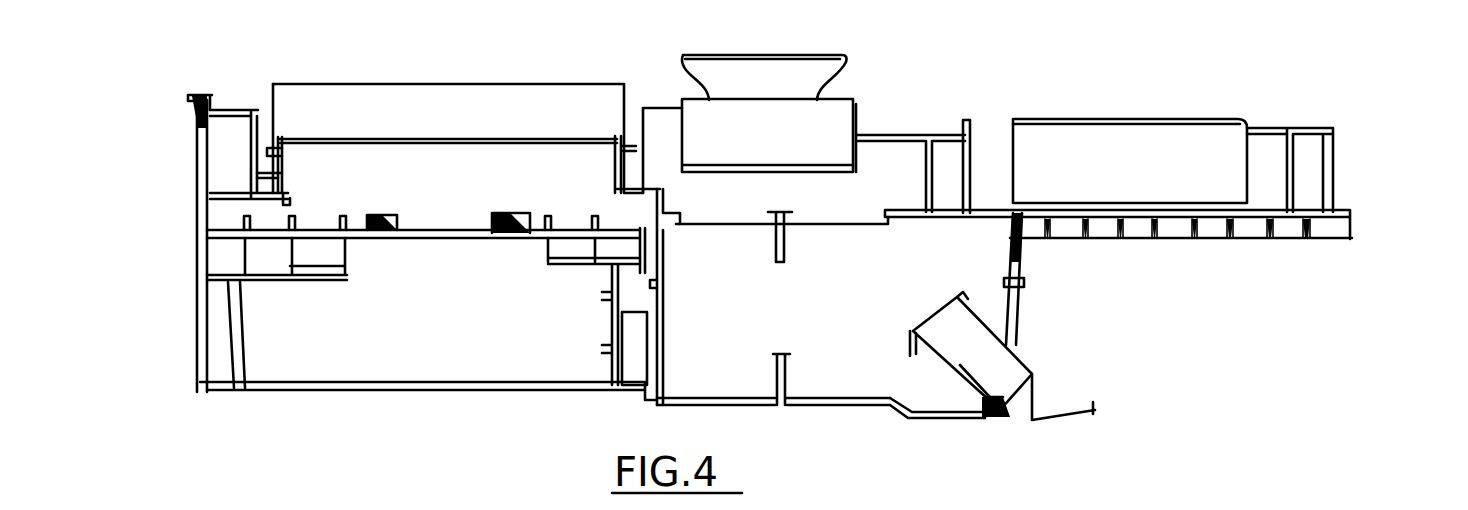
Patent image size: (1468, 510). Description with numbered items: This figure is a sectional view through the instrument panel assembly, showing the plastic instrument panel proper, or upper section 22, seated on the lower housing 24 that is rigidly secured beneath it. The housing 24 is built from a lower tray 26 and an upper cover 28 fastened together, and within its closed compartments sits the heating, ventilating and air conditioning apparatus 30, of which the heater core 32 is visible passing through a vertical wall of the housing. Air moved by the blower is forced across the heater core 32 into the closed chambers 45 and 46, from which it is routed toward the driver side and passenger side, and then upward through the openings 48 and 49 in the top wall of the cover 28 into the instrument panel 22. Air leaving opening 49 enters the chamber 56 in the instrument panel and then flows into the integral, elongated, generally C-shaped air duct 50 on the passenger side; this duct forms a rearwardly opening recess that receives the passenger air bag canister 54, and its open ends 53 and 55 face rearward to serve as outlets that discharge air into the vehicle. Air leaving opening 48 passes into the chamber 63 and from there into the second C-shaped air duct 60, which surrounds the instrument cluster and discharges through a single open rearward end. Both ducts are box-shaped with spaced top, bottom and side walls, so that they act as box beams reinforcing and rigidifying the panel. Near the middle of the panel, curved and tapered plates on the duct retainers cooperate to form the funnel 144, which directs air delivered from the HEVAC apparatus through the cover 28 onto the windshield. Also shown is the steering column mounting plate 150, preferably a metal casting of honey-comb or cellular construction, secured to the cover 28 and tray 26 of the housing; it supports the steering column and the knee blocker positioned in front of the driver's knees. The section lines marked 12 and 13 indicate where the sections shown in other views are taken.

The section line 12- 12 is at (893, 155).
The section line 13- 13 is at (164, 155).
The upper section 22 is at (1173, 78).
The housing 24 is at (1040, 294).
The lower tray 26 is at (1020, 323).
The upper cover 28 is at (1022, 258).
The HEVAC apparatus 30 is at (878, 368).
The heater core 32 is at (967, 363).
The closed chamber 45 is at (740, 342).
The closed chamber 46 is at (870, 332).
The opening 48 is at (730, 228).
The opening 49 is at (845, 228).
The air duct 50 is at (1310, 125).
The end of duct 53 is at (1333, 188).
The passenger air bag canister 54 is at (1203, 136).
The end of duct 55 is at (945, 140).
The chamber 56 is at (884, 133).
The air duct 60 is at (262, 128).
The chamber 63 is at (740, 209).
The funnel 144 is at (684, 64).
The steering column mounting plate 150 is at (268, 283).